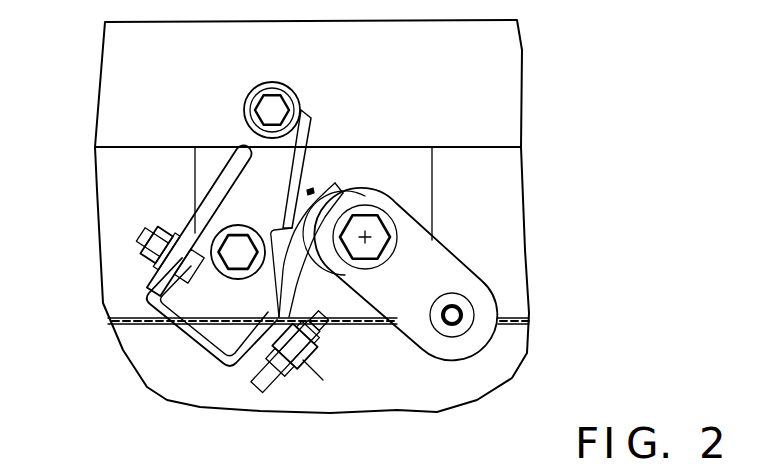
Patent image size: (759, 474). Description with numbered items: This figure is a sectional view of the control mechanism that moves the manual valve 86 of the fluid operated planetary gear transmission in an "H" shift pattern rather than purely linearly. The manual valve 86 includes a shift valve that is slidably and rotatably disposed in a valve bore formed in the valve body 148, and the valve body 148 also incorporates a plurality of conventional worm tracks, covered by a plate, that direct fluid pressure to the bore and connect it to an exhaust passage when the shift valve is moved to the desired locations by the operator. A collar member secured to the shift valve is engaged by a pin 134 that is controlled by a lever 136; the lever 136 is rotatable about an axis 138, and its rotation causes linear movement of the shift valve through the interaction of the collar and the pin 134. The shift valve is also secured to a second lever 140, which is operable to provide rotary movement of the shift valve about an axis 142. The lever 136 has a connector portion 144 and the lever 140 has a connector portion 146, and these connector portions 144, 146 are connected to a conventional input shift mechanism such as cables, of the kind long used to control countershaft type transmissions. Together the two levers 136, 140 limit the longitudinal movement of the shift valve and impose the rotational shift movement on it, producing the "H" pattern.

The manual valve 86 is at (331, 112).
The pin 134 is at (330, 202).
The lever 136 is at (193, 349).
The axis 138 is at (150, 238).
The lever 140 is at (433, 268).
The axis 142 is at (370, 232).
The connector portion 144 is at (200, 342).
The connector portion 146 is at (452, 315).
The valve body 148 is at (417, 197).